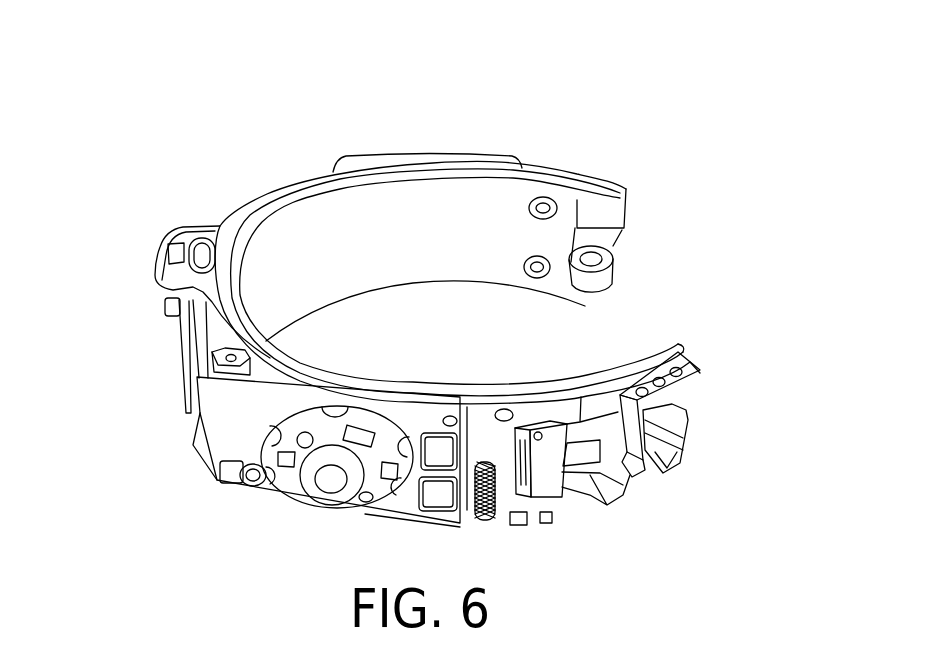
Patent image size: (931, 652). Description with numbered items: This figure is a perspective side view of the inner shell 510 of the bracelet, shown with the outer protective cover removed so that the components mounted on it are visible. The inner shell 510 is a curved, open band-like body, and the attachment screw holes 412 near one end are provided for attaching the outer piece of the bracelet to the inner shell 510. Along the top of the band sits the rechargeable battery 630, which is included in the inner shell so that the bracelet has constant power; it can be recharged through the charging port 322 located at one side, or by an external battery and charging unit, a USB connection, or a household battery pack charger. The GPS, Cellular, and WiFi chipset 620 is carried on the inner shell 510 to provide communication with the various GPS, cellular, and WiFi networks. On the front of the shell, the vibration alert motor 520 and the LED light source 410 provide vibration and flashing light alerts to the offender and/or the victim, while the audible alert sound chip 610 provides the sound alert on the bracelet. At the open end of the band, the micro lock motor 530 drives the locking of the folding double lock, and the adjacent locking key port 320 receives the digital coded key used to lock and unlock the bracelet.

The locking key port 320 is at (683, 362).
The charging port 322 is at (158, 256).
The LED light source 410 is at (326, 482).
The attachment screw holes 412 is at (547, 212).
The inner shell 510 is at (548, 136).
The vibration alert motor 520 is at (197, 413).
The micro lock motor 530 is at (633, 473).
The audible alert sound chip 610 is at (545, 497).
The GPS, Cellular, and WiFi chipset 620 is at (264, 193).
The rechargeable battery 630 is at (433, 154).